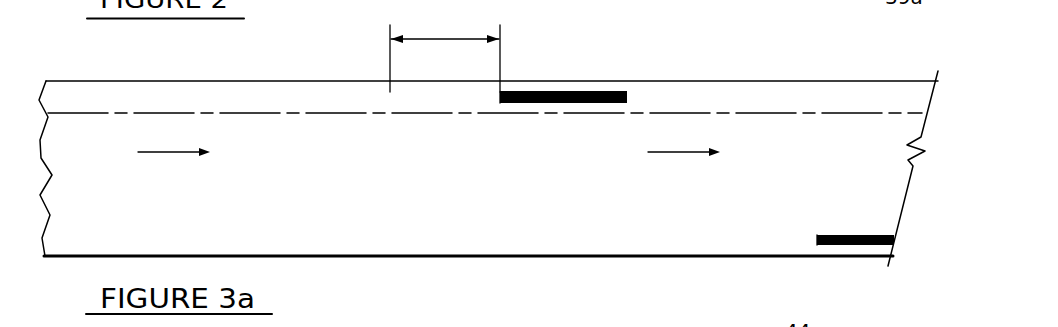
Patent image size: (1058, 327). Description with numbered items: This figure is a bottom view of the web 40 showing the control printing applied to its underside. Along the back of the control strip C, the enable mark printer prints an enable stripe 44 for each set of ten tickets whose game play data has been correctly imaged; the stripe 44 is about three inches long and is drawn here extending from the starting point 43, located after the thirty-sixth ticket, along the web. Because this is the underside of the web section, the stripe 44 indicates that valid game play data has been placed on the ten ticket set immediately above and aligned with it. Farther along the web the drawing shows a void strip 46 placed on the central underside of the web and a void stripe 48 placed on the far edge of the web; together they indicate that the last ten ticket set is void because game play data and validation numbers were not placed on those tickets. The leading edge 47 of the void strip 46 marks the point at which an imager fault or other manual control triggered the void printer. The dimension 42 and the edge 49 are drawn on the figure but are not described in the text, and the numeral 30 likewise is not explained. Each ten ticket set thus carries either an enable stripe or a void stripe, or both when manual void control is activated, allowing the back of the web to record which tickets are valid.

The control strip C is at (80, 100).
The web 30 is at (323, 74).
The web 40 is at (360, 164).
The patch spacing dimension 42 is at (447, 36).
The starting point of enable stripe 43 is at (499, 98).
The enable stripe 44 is at (585, 91).
The void strip 46 is at (829, 161).
The leading edge of void strip 47 is at (816, 171).
The void stripe 48 is at (855, 246).
The leading edge of second patch 49 is at (818, 239).